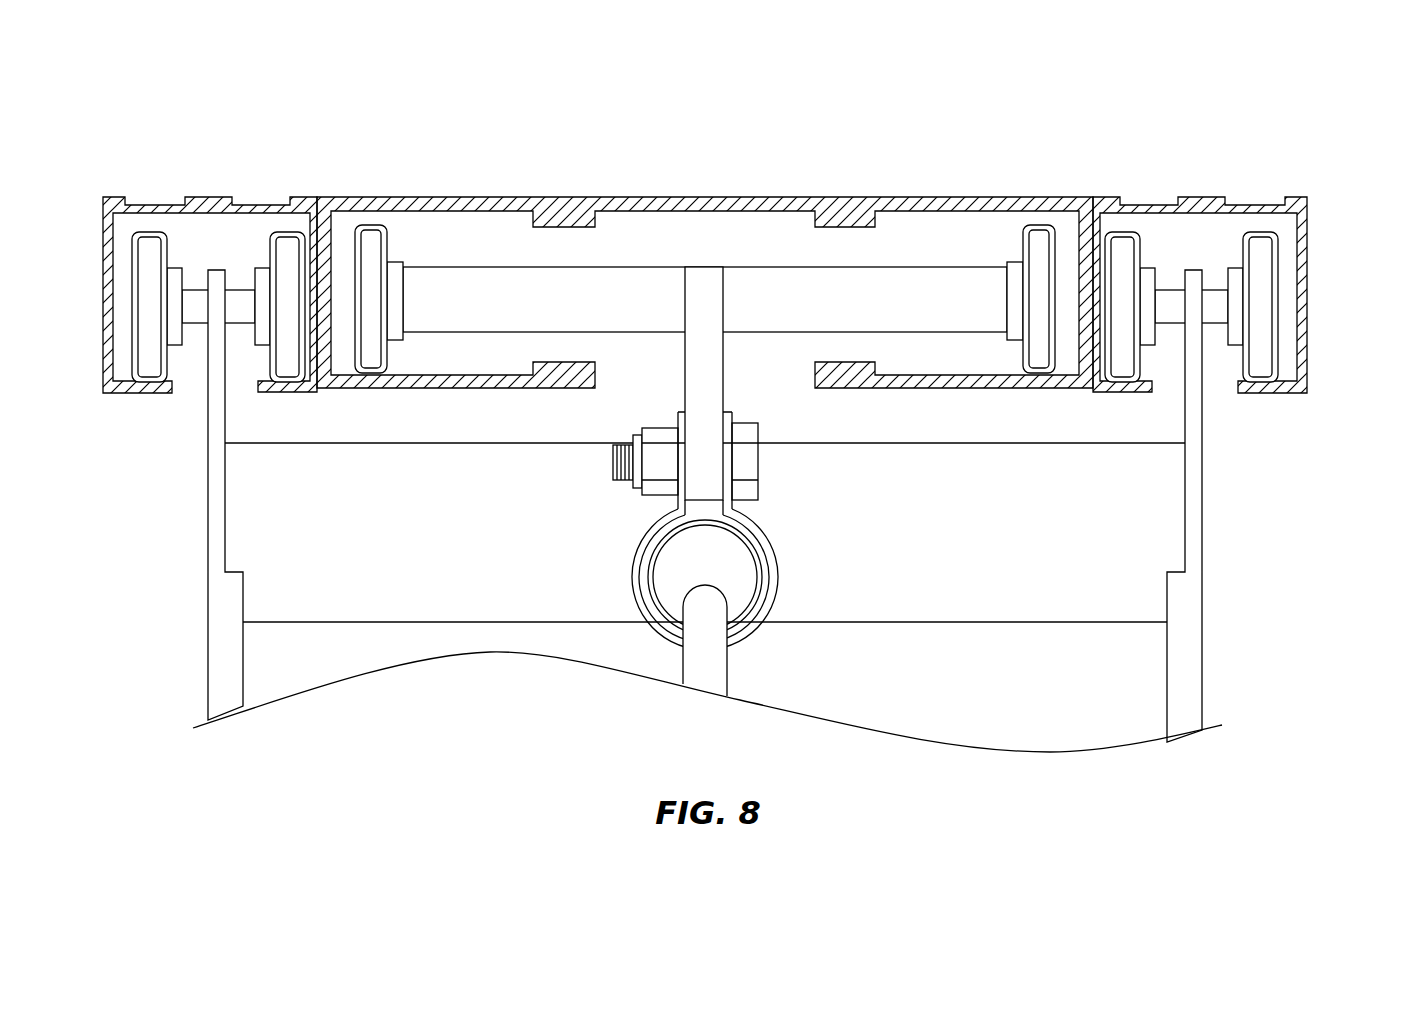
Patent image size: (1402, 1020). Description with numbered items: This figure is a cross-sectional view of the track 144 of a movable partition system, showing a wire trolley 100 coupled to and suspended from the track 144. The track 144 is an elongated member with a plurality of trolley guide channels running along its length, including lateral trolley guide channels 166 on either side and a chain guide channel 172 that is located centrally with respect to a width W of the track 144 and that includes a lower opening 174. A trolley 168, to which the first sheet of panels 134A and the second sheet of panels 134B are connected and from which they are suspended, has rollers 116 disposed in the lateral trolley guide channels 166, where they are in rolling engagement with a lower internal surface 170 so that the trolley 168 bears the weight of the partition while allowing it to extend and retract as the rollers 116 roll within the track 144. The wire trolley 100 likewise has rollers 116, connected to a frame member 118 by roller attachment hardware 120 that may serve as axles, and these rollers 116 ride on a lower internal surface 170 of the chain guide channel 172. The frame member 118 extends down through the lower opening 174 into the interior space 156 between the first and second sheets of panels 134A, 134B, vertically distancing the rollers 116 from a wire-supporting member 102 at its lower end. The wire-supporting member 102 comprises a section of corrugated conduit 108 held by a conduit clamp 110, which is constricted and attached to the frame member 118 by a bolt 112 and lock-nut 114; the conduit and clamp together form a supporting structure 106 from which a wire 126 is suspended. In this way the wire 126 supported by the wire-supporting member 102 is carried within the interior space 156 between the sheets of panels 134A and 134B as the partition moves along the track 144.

The width of the track W is at (1307, 195).
The wire trolley 100 is at (577, 240).
The wire-supporting member 102 is at (721, 554).
The supporting structure 106 is at (670, 654).
The section of corrugated conduit 108 is at (647, 597).
The conduit clamp 110 is at (638, 553).
The bolt 112 is at (748, 470).
The lock-nut 114 is at (662, 455).
The rollers 116 is at (270, 247).
The frame member 118 is at (710, 312).
The roller attachment hardware 120 is at (452, 295).
The wire 126 is at (708, 665).
The first sheet of panels 134A is at (1185, 682).
The second sheet of panels 134B is at (223, 657).
The track 144 is at (710, 203).
The interior space 156 is at (421, 429).
The lateral trolley guide channels 166 is at (190, 373).
The trolley 168 is at (1059, 504).
The lower internal surface 170 is at (122, 378).
The chain guide channel 172 is at (641, 250).
The lower opening 174 is at (771, 363).